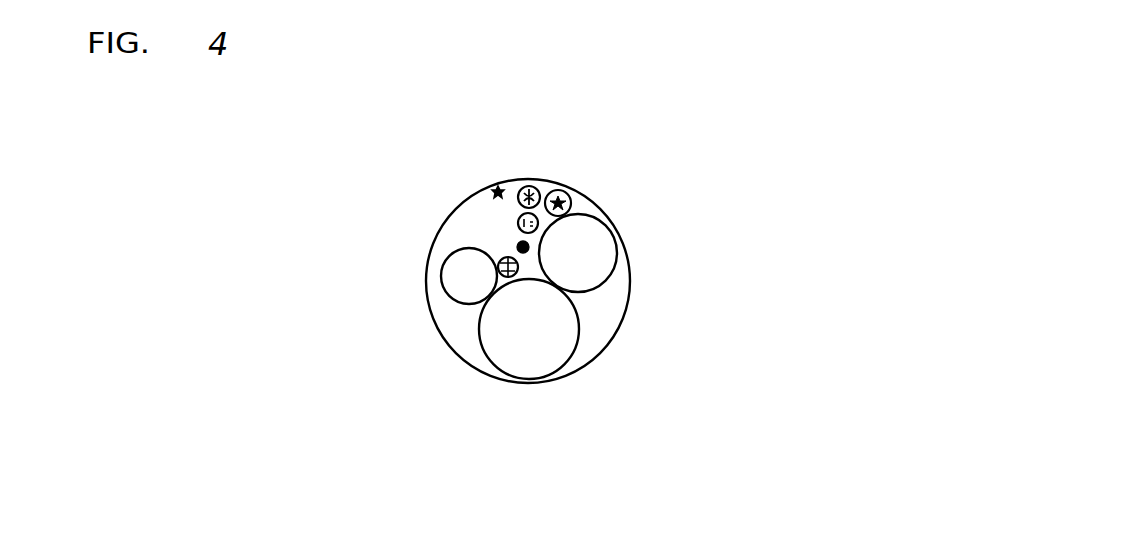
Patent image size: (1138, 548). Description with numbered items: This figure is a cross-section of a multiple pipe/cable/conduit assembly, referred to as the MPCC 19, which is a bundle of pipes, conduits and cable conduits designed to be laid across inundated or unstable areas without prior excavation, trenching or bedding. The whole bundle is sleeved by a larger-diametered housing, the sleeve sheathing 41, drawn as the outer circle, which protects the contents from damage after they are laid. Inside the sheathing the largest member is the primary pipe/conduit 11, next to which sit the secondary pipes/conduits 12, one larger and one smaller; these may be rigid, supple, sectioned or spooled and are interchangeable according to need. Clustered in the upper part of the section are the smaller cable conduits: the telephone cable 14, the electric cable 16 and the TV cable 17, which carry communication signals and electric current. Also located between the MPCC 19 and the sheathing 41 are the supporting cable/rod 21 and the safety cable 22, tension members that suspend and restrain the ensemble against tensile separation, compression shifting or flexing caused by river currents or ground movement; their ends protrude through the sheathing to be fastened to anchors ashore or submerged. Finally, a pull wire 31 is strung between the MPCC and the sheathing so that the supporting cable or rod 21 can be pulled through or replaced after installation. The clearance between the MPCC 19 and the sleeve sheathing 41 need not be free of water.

The sleeve sheathing 41 is at (620, 333).
The primary pipe/conduit 11 is at (580, 307).
The secondary pipe/conduit 12 is at (372, 299).
The supporting cable/rod 21 is at (538, 186).
The safety cable 22 is at (572, 196).
The electric cable conduit 16 is at (512, 218).
The TV cable conduit 17 is at (515, 242).
The telephone cable conduit 14 is at (502, 255).
The pull wire 31 is at (483, 177).
The multiple pipe/cable/conduit (MPCC) 19 is at (588, 340).